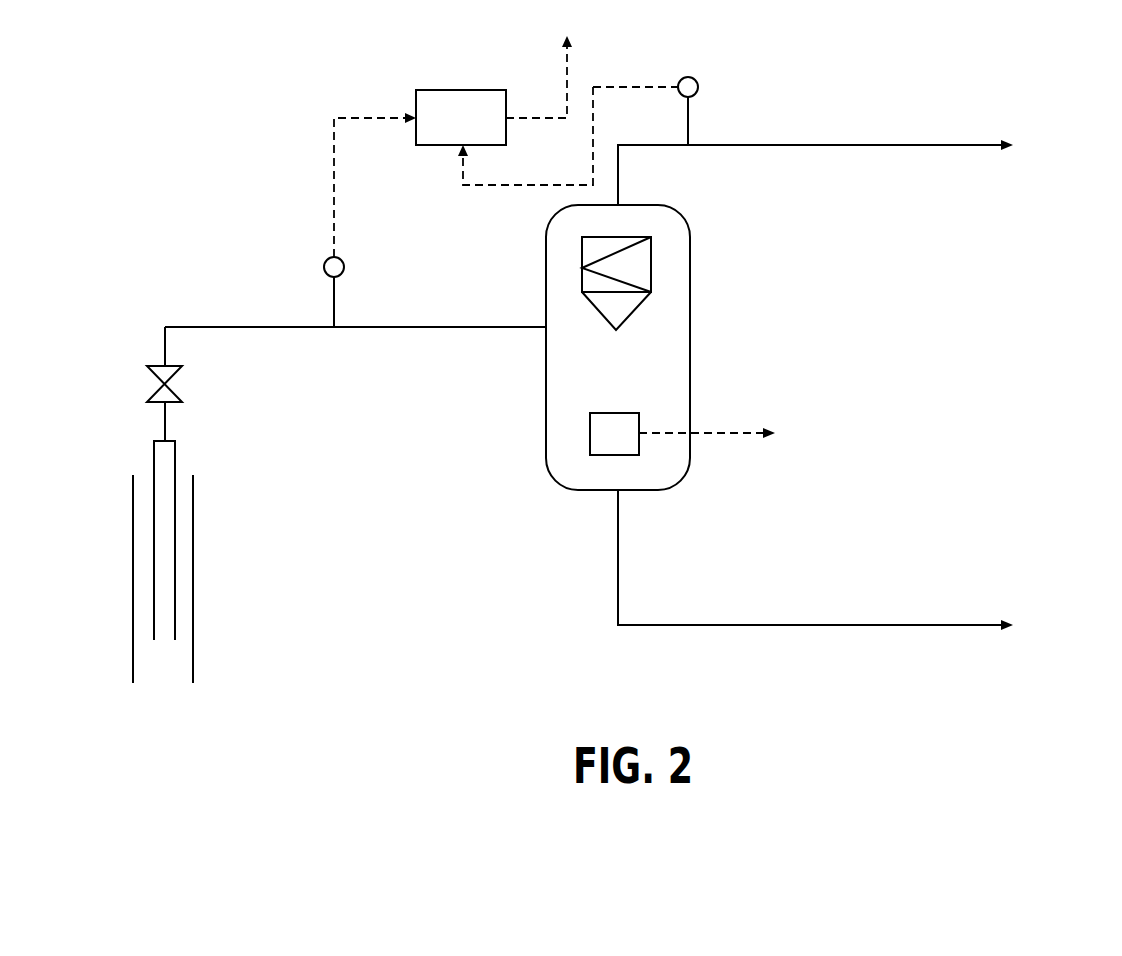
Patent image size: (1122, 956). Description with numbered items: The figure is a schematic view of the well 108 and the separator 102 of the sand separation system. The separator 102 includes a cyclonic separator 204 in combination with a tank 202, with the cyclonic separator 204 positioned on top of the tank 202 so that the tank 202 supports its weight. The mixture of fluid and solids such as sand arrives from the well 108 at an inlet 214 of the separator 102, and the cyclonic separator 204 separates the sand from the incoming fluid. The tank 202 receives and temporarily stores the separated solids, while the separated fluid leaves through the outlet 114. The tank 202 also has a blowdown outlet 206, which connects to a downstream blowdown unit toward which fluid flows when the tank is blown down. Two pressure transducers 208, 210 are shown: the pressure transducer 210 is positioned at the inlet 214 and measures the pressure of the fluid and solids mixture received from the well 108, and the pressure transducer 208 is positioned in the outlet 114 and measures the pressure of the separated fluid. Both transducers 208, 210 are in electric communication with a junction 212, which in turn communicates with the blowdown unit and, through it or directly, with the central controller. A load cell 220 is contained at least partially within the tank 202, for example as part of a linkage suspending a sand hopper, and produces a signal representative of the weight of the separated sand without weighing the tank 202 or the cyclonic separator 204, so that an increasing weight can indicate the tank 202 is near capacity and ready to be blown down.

The separator 102 is at (1005, 61).
The well 108 is at (131, 339).
The outlet 114 is at (795, 143).
The tank 202 is at (690, 353).
The cyclonic separator 204 is at (652, 262).
The blowdown outlet 206 is at (620, 562).
The pressure transducer 208 is at (696, 78).
The pressure transducer 210 is at (343, 258).
The junction 212 is at (438, 89).
The inlet 214 is at (425, 326).
The load cell 220 is at (600, 455).